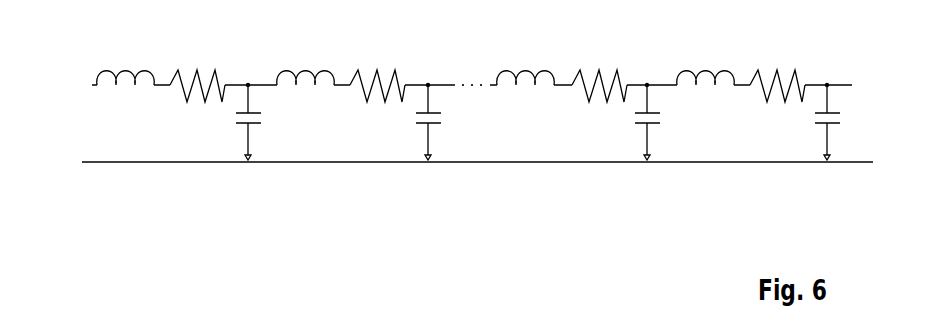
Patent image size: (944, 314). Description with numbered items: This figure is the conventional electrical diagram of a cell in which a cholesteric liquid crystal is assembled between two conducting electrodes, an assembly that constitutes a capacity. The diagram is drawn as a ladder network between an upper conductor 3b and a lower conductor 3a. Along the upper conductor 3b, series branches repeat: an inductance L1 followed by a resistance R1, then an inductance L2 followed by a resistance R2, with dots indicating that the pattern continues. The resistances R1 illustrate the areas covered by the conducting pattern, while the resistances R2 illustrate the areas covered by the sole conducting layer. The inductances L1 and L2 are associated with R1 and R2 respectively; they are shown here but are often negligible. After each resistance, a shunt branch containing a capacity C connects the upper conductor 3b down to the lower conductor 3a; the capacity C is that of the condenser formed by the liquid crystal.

The first conductor (ground line) 3a is at (113, 168).
The second conductor (signal line) 3b is at (88, 76).
The inductance L1 is at (326, 65).
The resistance R1 is at (398, 74).
The inductance L2 is at (506, 65).
The resistance R2 is at (577, 74).
The capacity C is at (521, 121).